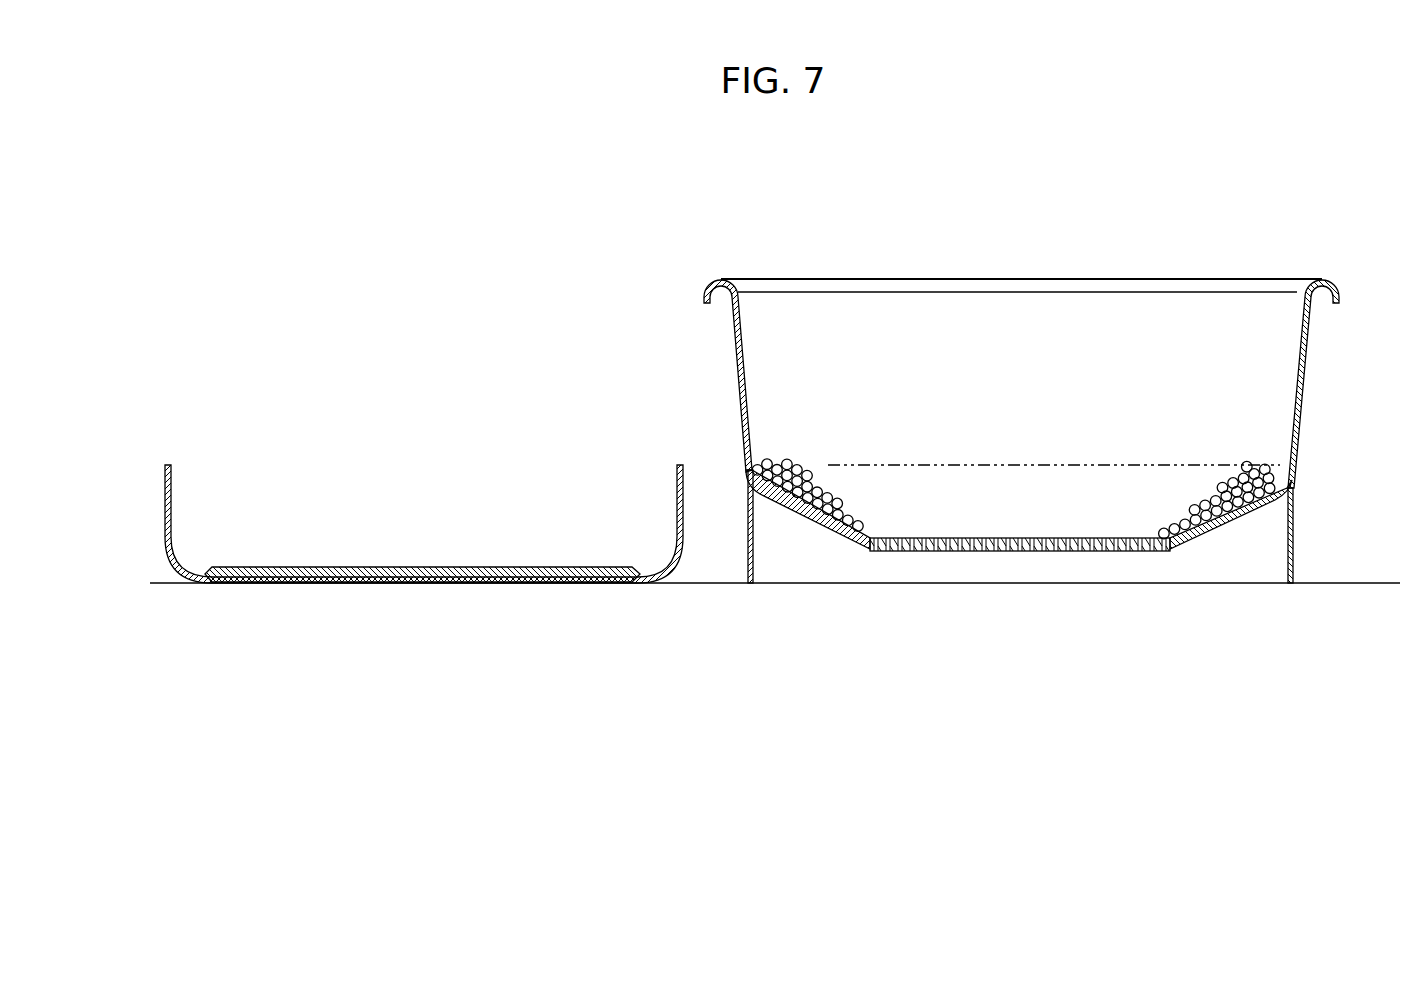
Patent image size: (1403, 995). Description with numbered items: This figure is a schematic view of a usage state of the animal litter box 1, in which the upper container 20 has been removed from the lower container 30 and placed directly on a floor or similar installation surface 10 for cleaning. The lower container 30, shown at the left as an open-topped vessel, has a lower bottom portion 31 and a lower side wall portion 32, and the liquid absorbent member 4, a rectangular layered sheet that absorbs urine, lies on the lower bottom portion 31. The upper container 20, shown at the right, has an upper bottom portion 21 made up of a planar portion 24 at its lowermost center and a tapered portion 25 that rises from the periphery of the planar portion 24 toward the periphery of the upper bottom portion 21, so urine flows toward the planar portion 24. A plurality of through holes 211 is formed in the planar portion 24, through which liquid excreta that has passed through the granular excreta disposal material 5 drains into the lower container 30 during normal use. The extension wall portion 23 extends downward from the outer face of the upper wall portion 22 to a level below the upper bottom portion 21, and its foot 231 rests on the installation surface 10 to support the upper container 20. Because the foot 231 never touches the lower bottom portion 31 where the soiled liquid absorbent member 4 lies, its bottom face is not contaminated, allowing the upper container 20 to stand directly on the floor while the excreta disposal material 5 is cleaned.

The animal litter box 1 is at (1105, 242).
The upper container 20 is at (1045, 402).
The upper bottom portion 21 is at (988, 433).
The upper wall portion 22 is at (752, 420).
The extension wall portion 23 is at (1297, 500).
The foot 231 is at (1296, 540).
The planar portion 24 is at (1046, 500).
The tapered portion 25 is at (862, 492).
The through hole 211 is at (963, 551).
The excreta disposal material 5 is at (1013, 461).
The installation surface 10 is at (1299, 616).
The lower container 30 is at (287, 453).
The lower bottom portion 31 is at (640, 566).
The lower side wall portion 32 is at (172, 512).
The liquid absorbent member 4 is at (458, 570).